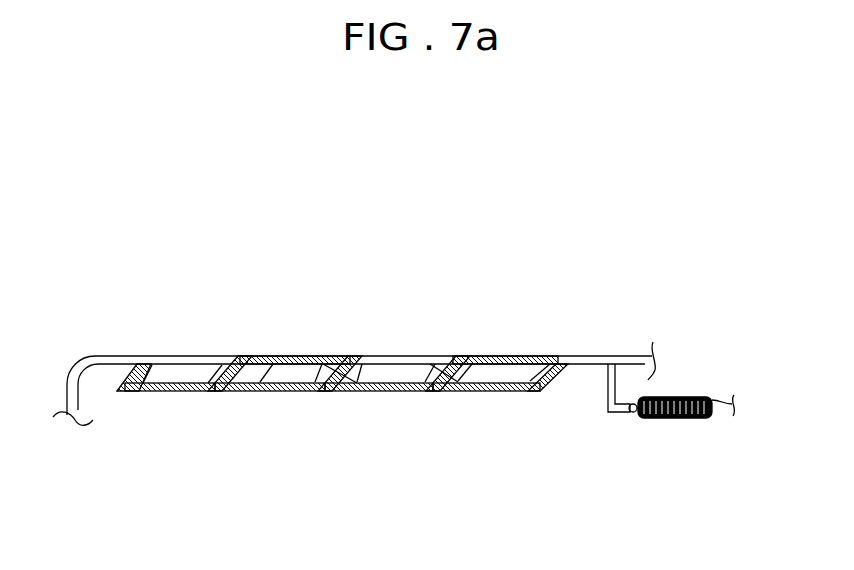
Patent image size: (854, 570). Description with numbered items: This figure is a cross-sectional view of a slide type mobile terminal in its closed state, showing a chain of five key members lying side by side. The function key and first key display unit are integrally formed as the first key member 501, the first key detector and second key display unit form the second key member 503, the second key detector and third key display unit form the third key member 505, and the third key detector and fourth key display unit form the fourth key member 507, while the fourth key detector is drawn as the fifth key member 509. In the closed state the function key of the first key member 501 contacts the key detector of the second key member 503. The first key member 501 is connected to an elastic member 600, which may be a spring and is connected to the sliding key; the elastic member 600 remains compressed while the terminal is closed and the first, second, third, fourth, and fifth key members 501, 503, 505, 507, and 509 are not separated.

The first key member 501 is at (608, 357).
The second key member 503 is at (503, 357).
The third key member 505 is at (395, 357).
The fourth key member 507 is at (290, 357).
The fifth key member 509 is at (183, 357).
The elastic member 600 is at (676, 418).